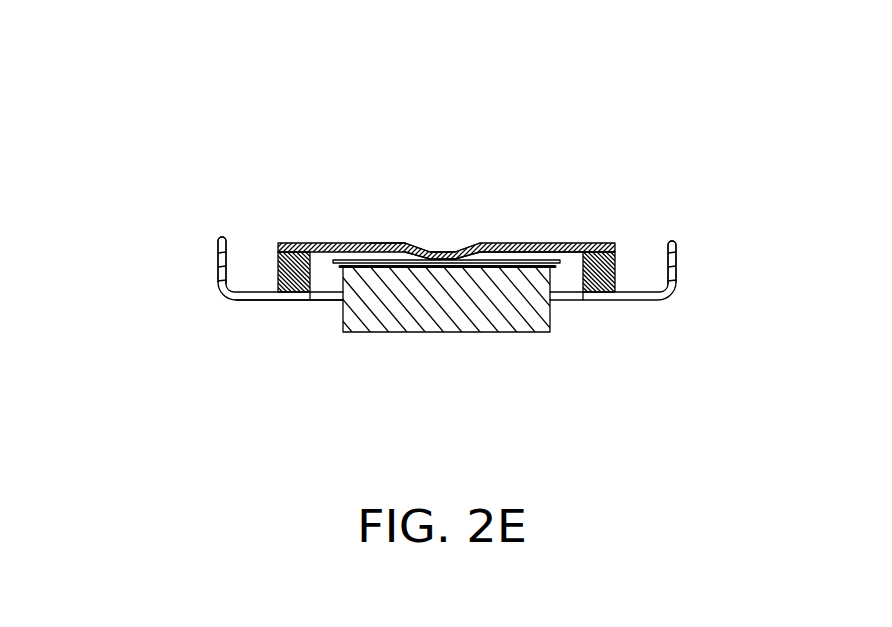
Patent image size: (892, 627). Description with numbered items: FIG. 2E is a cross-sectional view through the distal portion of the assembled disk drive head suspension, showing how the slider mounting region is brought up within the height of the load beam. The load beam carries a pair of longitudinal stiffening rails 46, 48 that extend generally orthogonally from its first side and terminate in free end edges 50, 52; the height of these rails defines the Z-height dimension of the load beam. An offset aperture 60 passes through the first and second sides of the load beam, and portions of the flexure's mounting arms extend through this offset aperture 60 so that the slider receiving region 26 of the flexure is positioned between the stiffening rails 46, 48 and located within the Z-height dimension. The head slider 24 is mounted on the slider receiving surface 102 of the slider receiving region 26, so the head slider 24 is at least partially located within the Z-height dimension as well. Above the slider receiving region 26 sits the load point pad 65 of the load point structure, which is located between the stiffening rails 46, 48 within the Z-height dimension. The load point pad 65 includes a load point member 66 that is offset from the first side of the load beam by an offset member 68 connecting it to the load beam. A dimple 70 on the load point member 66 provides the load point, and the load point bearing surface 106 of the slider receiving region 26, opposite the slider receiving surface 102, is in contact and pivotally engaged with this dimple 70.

The head slider 24 is at (488, 333).
The slider receiving region 26 is at (400, 266).
The longitudinal stiffening rail 46 is at (217, 266).
The longitudinal stiffening rail 48 is at (677, 267).
The free end edge 50 is at (222, 237).
The free end edge 52 is at (672, 241).
The offset aperture 60 is at (327, 302).
The load point pad 65 is at (330, 243).
The load point member 66 is at (448, 248).
The offset member 68 is at (272, 260).
The dimple 70 is at (383, 243).
The slider receiving surface 102 is at (578, 258).
The load point bearing surface 106 is at (507, 258).